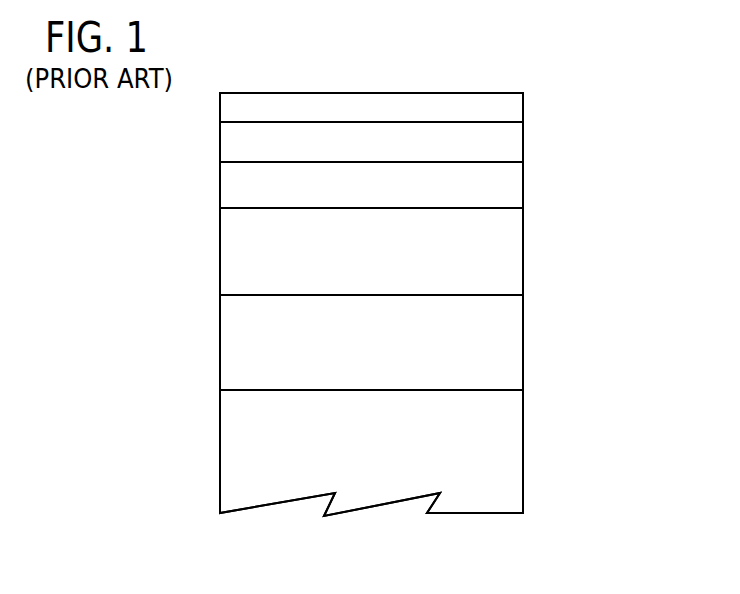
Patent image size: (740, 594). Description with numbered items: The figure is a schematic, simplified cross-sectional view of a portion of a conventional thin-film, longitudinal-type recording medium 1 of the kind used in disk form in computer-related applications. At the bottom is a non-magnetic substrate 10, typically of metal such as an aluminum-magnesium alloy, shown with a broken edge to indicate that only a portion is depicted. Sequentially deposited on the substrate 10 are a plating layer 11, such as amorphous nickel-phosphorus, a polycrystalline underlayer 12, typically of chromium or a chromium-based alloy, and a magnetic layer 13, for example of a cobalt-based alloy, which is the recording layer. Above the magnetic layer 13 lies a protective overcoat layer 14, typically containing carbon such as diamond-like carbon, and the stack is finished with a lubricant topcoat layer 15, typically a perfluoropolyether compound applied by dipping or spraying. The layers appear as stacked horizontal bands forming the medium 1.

The recording medium 1 is at (618, 142).
The non-magnetic substrate 10 is at (523, 449).
The plating layer 11 is at (523, 348).
The polycrystalline underlayer 12 is at (523, 250).
The magnetic layer 13 is at (523, 183).
The protective overcoat layer 14 is at (523, 142).
The lubricant topcoat layer 15 is at (523, 103).